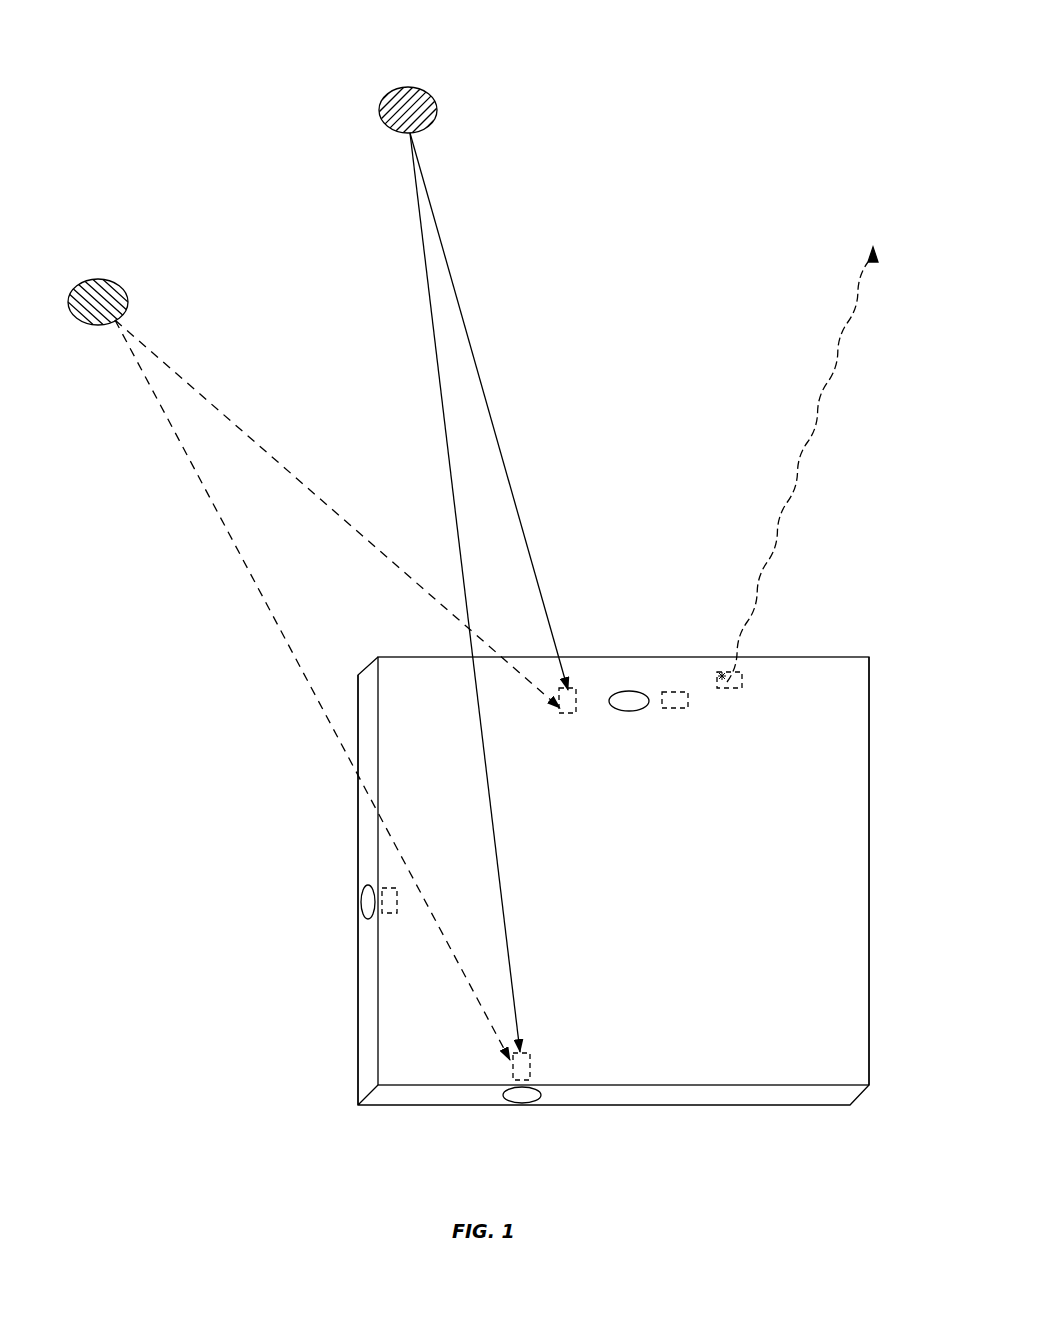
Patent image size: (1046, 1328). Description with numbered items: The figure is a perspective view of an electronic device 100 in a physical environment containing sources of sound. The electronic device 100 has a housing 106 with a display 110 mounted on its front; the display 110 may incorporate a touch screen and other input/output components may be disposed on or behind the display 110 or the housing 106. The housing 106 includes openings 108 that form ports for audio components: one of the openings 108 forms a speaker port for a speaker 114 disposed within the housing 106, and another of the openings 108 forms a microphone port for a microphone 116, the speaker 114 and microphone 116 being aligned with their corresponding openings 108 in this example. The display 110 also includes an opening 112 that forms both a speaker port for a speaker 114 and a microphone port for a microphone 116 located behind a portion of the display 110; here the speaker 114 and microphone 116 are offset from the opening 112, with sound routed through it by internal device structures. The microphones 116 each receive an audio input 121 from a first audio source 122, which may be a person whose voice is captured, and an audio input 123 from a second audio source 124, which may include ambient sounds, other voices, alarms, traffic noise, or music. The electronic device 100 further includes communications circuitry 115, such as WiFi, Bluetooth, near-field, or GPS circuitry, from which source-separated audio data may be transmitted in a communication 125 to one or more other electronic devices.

The electronic device 100 is at (827, 657).
The housing 106 is at (368, 863).
The openings 108 is at (364, 903).
The display 110 is at (845, 872).
The opening 112 is at (630, 690).
The speakers 114 is at (673, 708).
The communications circuitry 115 is at (728, 690).
The microphones 116 is at (570, 713).
The audio input 121 is at (232, 424).
The first audio source 122 is at (97, 280).
The audio input 123 is at (465, 312).
The second audio source 124 is at (408, 87).
The communication 125 is at (812, 423).